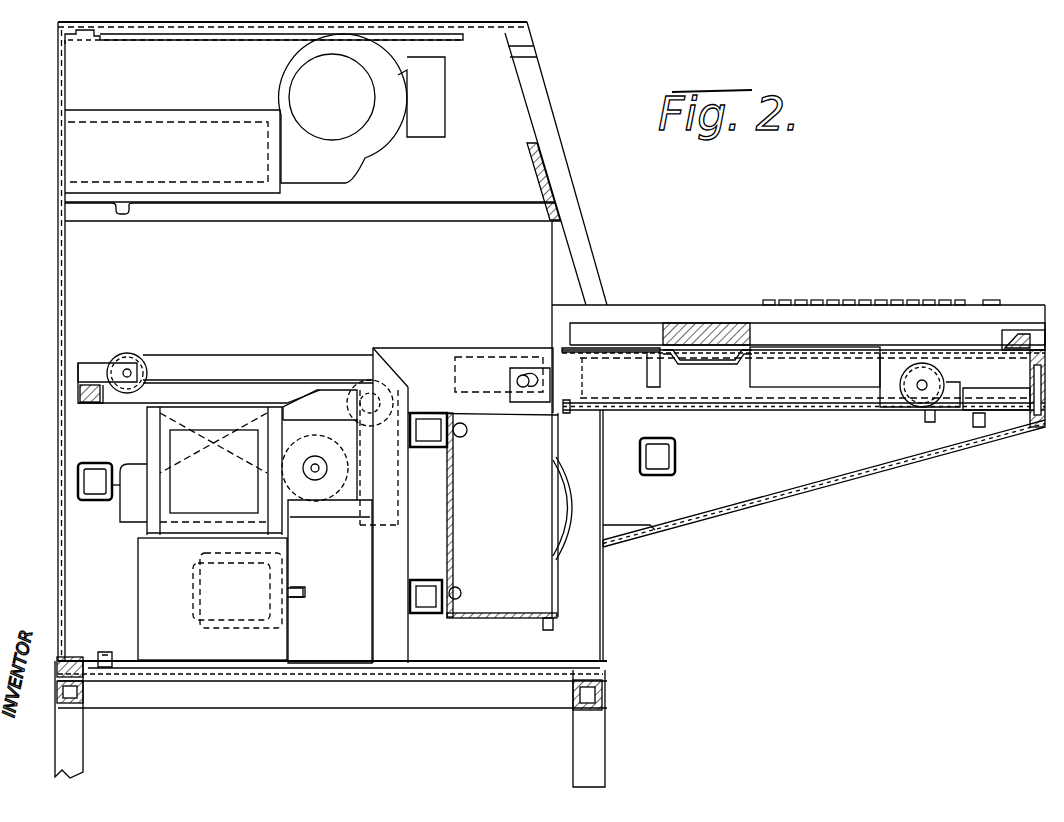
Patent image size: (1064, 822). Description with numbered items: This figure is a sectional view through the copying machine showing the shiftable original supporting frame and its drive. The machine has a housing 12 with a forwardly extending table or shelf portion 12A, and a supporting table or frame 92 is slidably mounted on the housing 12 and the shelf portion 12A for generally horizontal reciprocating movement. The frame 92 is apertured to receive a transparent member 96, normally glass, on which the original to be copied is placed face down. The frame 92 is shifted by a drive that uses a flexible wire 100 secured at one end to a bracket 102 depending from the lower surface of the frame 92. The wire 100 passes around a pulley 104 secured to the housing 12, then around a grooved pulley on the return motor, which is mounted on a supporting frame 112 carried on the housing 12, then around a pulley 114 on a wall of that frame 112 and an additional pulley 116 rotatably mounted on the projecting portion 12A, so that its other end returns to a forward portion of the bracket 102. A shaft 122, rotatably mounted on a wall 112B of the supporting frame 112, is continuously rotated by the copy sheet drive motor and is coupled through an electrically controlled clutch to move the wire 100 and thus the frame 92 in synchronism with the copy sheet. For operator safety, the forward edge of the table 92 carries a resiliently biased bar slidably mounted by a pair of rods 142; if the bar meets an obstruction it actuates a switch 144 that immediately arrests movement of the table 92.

The housing 12 is at (60, 176).
The table or shelf portion 12A is at (748, 500).
The supporting table or frame 92 is at (920, 332).
The transparent member 96 is at (680, 323).
The wire 100 is at (190, 355).
The bracket 102 is at (720, 355).
The pulley 104 is at (125, 355).
The supporting frame 112 is at (118, 508).
The wall 112B is at (135, 470).
The pulley 114 is at (337, 392).
The pulley 116 is at (932, 425).
The shaft 122 is at (315, 475).
The rods 142 is at (1030, 334).
The switch 144 is at (1015, 360).